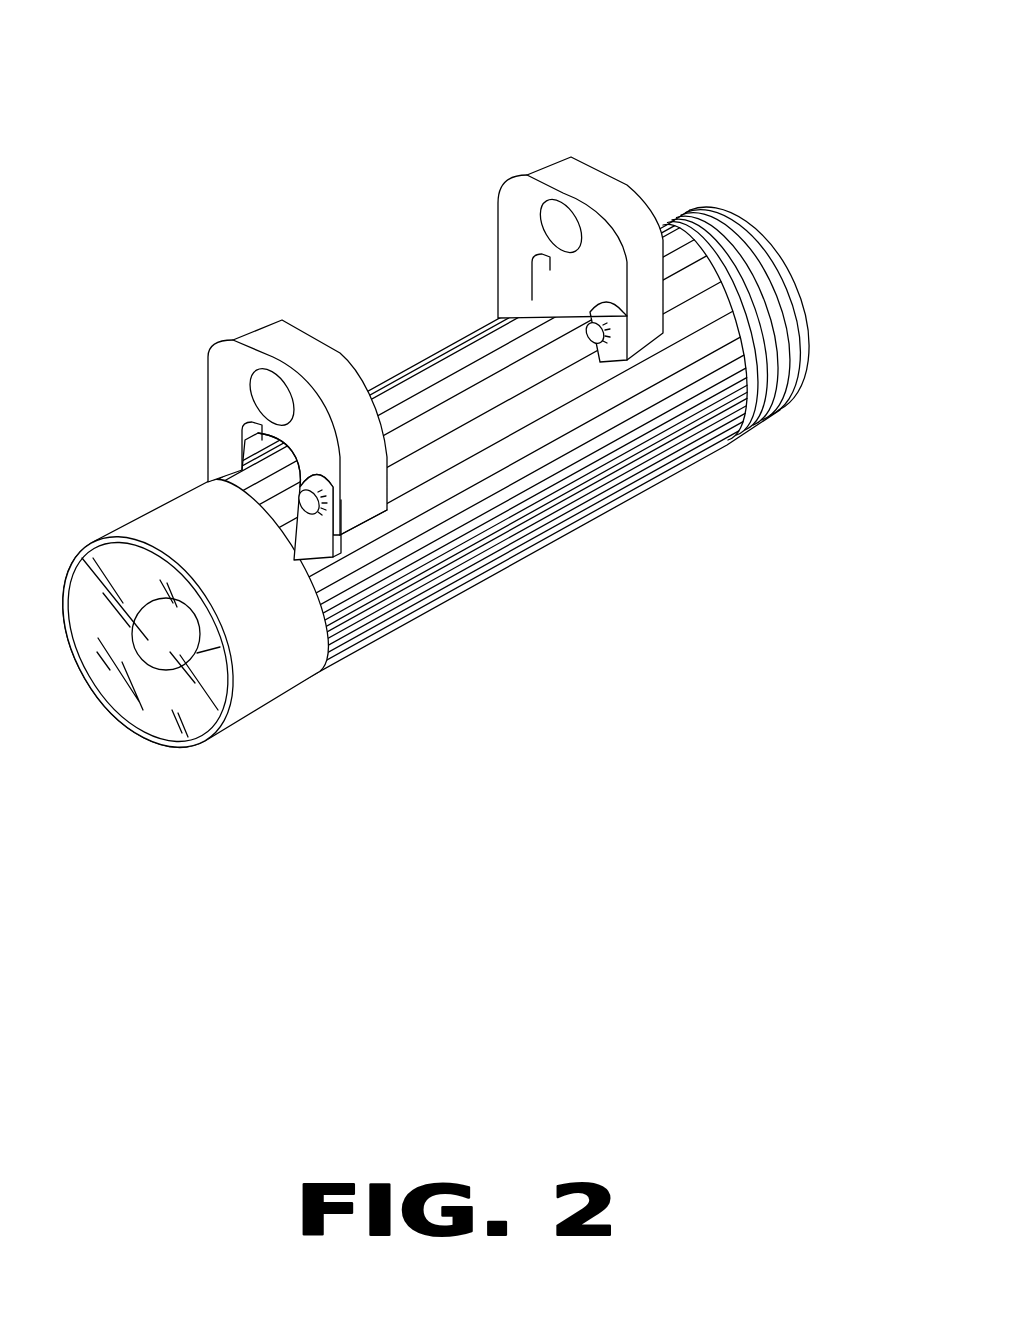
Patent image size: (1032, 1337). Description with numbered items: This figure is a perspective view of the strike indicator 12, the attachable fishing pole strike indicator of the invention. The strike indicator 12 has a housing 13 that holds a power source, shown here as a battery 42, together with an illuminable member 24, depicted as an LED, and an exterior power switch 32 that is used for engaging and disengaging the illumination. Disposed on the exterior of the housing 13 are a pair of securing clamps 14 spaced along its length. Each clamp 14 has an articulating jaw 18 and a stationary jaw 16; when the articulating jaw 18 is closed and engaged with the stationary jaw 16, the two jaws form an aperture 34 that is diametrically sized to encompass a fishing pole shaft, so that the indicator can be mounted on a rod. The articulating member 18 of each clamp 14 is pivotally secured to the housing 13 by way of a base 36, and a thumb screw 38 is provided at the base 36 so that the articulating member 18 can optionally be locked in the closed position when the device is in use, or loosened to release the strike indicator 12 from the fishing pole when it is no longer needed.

The strike indicator 12 is at (715, 119).
The housing 13 is at (582, 496).
The securing clamps 14 is at (517, 232).
The stationary jaw member 16 is at (233, 352).
The articulating jaw member 18 is at (358, 497).
The illuminable element 24 is at (162, 633).
The power switch 32 is at (777, 408).
The aperture 34 is at (270, 394).
The locking base 36 is at (350, 540).
The thumb wheel lock 38 is at (310, 512).
The battery 42 is at (578, 284).